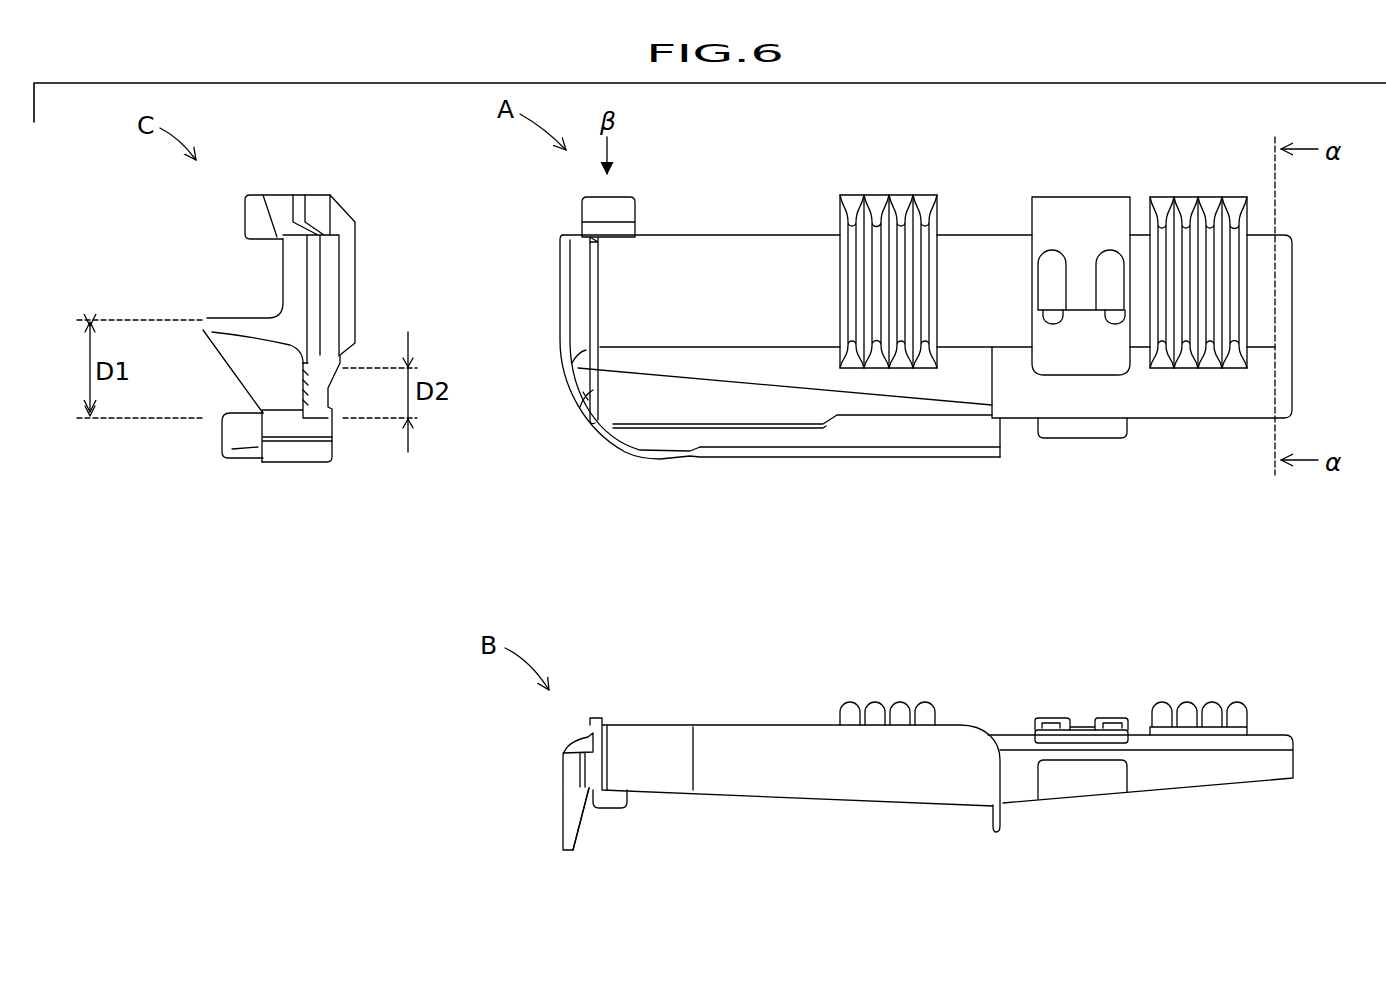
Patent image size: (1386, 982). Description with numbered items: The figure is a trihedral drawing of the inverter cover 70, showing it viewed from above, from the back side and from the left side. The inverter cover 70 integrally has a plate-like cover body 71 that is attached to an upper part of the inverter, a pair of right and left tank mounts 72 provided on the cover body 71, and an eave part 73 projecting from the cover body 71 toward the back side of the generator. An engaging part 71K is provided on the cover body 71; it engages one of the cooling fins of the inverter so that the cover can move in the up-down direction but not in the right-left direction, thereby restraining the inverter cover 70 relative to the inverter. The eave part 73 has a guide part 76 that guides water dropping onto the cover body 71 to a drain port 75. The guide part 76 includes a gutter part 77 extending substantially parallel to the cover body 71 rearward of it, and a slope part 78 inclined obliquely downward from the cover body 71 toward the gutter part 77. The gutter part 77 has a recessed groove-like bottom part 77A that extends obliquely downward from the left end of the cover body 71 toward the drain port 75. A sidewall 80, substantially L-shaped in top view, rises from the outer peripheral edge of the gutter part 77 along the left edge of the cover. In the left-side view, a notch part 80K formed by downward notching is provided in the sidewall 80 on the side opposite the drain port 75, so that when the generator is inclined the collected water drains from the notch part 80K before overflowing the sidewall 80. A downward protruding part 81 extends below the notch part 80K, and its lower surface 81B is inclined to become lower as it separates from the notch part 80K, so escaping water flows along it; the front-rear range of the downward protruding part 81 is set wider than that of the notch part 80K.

The inverter cover 70 is at (364, 179).
The cover body 71 is at (981, 258).
The engaging part 71K is at (630, 205).
The tank mounts 72 is at (873, 195).
The eave part 73 is at (1138, 432).
The drain port 75 is at (1005, 430).
The guide part 76 is at (785, 271).
The gutter part 77 is at (760, 432).
The bottom part 77A is at (853, 428).
The slope part 78 is at (717, 370).
The sidewall 80 is at (722, 460).
The notch part 80K is at (575, 397).
The downward protruding part 81 is at (237, 332).
The lower surface 81B is at (223, 352).